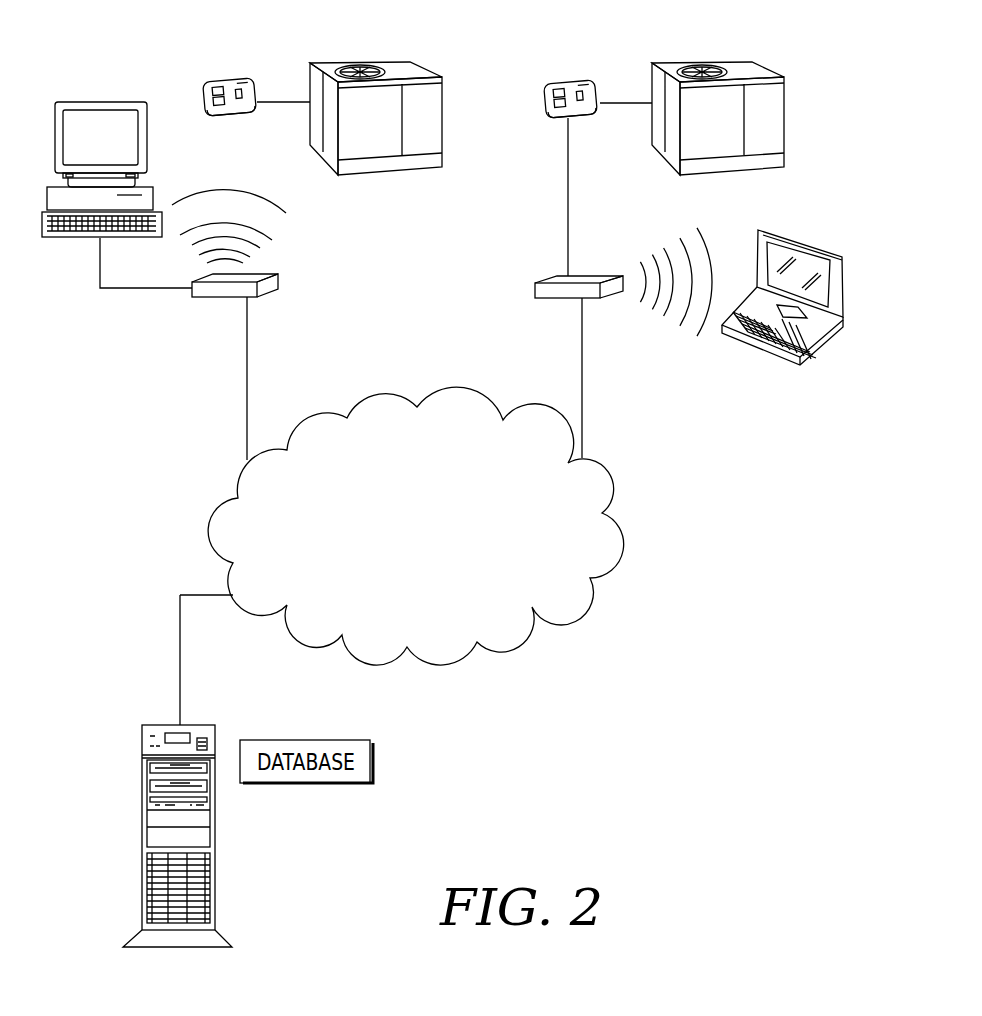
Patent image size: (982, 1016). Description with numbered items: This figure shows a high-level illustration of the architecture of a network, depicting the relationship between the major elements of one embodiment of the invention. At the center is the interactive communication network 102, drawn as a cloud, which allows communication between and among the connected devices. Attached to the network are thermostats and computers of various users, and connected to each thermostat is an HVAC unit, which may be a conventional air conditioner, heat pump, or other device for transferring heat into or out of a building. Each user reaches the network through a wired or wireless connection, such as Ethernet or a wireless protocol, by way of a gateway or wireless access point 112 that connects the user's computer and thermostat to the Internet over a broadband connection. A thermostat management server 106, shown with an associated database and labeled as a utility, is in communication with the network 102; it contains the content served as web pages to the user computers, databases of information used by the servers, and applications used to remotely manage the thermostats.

The network 102 is at (613, 483).
The server 106 is at (140, 755).
The router 112 is at (550, 276).